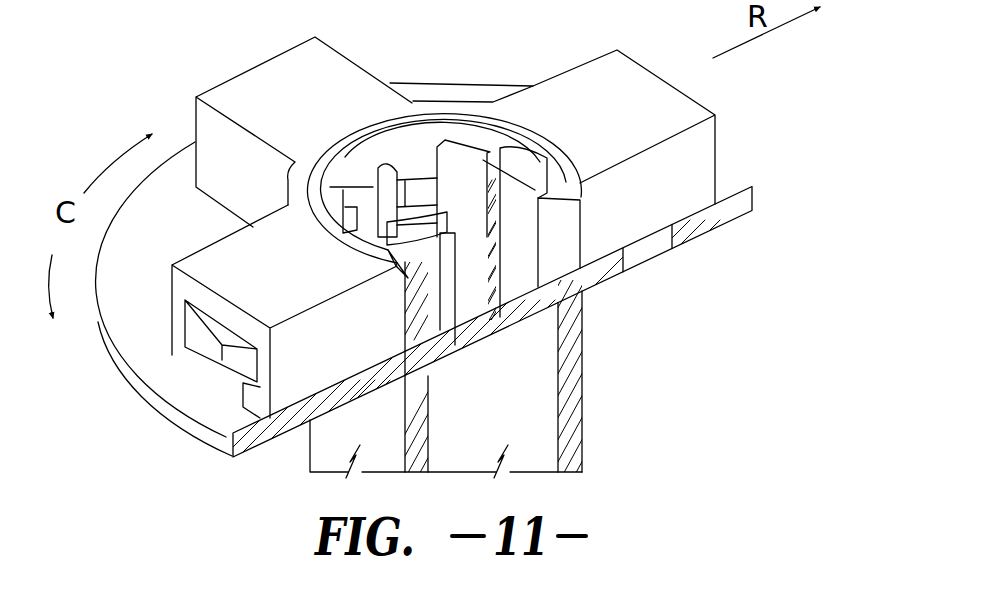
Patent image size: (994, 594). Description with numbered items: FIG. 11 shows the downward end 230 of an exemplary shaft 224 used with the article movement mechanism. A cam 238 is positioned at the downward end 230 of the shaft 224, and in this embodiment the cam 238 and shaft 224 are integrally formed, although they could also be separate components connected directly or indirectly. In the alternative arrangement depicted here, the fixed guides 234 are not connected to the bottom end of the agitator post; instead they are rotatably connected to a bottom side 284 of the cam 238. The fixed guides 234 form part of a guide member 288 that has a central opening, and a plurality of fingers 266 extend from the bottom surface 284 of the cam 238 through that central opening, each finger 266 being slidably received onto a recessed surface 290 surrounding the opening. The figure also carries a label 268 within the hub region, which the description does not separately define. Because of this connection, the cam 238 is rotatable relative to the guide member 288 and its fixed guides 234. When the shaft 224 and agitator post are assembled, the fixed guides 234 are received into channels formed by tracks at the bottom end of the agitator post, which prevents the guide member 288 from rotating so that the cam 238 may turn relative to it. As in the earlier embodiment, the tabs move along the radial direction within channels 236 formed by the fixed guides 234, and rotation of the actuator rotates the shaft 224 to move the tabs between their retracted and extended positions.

The shaft 224 is at (574, 392).
The downward end 230 is at (600, 310).
The fixed guides 234 is at (273, 62).
The channels 236 is at (220, 387).
The cam 238 is at (130, 324).
The fingers 266 is at (472, 147).
The central opening 268 is at (427, 122).
The bottom side 284 is at (725, 177).
The guide member 288 is at (303, 275).
The recessed surface 290 is at (540, 165).